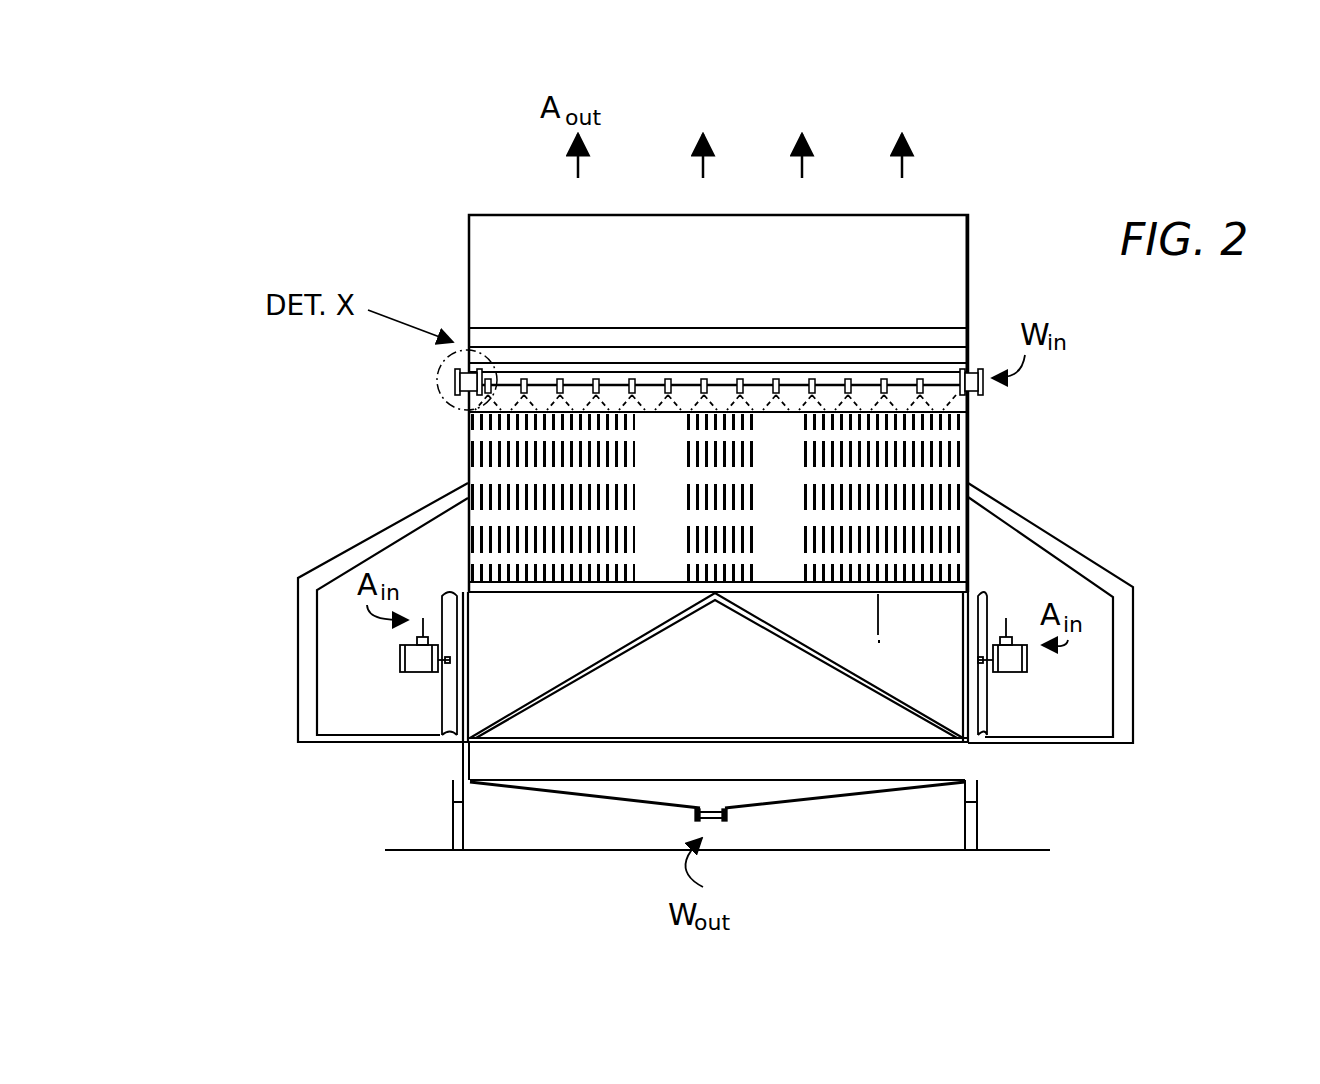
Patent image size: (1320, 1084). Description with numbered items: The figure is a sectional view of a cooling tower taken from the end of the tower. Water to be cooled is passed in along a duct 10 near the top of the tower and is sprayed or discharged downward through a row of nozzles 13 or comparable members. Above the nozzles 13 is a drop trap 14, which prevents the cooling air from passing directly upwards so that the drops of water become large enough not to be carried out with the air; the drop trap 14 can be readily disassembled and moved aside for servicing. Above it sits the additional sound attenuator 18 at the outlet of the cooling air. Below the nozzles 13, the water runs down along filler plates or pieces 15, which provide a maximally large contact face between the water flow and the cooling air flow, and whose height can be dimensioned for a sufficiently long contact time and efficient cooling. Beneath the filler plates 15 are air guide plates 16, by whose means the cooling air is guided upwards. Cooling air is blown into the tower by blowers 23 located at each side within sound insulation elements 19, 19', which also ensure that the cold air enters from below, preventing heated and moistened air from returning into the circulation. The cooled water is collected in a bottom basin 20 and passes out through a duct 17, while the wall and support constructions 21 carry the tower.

The duct 10 is at (973, 372).
The nozzle 13 is at (958, 400).
The drop trap 14 is at (930, 348).
The filler plates and/or pieces 15 is at (468, 447).
The air guide plate 16 is at (547, 643).
The duct 17 is at (727, 818).
The additional sound attenuator 18 is at (959, 233).
The sound insulation element 19 is at (336, 612).
The sound insulation element 19' is at (1067, 613).
The bottom basin 20 is at (630, 762).
The wall and support constructions 21 is at (906, 703).
The blower 23 is at (400, 655).